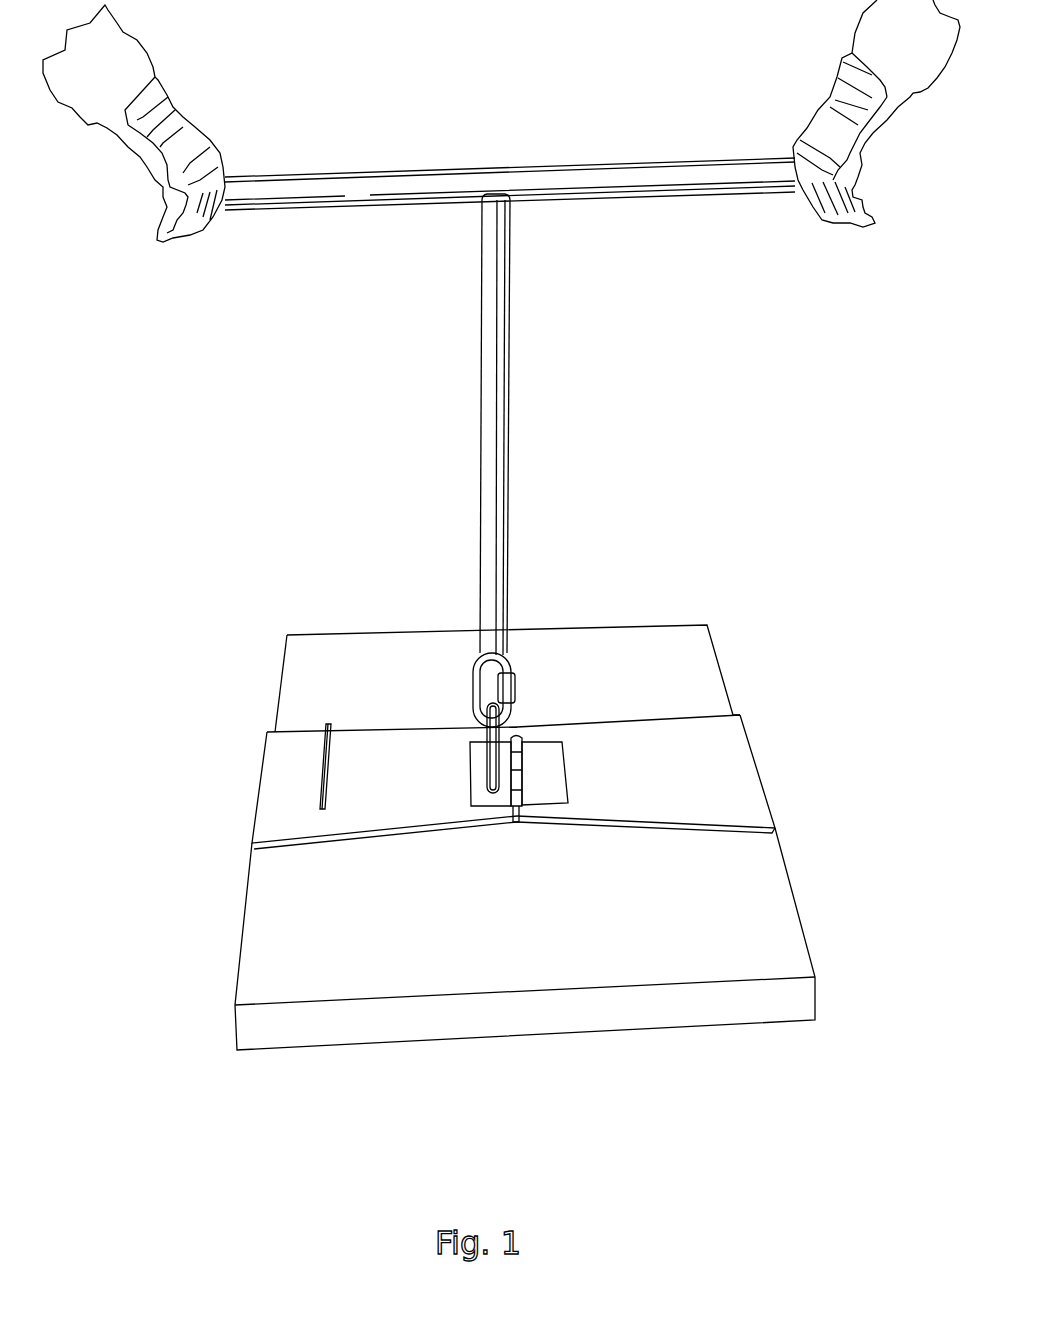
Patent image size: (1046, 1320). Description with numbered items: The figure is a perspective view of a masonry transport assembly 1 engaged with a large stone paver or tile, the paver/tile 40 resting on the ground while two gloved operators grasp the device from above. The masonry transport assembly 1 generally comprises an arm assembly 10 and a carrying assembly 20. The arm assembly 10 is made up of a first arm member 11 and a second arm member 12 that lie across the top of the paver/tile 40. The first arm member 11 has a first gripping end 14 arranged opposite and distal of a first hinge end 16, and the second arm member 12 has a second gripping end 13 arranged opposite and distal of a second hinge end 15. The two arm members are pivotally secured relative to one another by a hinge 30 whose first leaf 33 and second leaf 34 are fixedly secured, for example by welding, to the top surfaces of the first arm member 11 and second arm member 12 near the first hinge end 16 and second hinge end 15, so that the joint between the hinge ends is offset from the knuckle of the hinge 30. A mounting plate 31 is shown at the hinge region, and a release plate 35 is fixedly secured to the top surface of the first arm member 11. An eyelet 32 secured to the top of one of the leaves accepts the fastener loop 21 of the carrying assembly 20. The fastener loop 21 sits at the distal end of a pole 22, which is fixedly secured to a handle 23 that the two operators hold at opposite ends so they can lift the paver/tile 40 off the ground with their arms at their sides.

The masonry transport assembly 1 is at (628, 492).
The arm assembly 10 is at (508, 769).
The first arm member 11 is at (342, 792).
The second arm member 12 is at (683, 745).
The second gripping end 13 is at (765, 782).
The first gripping end 14 is at (255, 785).
The second hinge end 15 is at (523, 825).
The first hinge end 16 is at (510, 825).
The carrying assembly 20 is at (510, 442).
The fastener loop 21 is at (505, 645).
The pole 22 is at (514, 312).
The handle 23 is at (622, 198).
The hinge 30 is at (519, 767).
The mounting plate 31 is at (480, 790).
The eyelet 32 is at (483, 722).
The first leaf 33 is at (483, 812).
The second leaf 34 is at (551, 812).
The release plate 35 is at (333, 787).
The paver/tile 40 is at (375, 650).